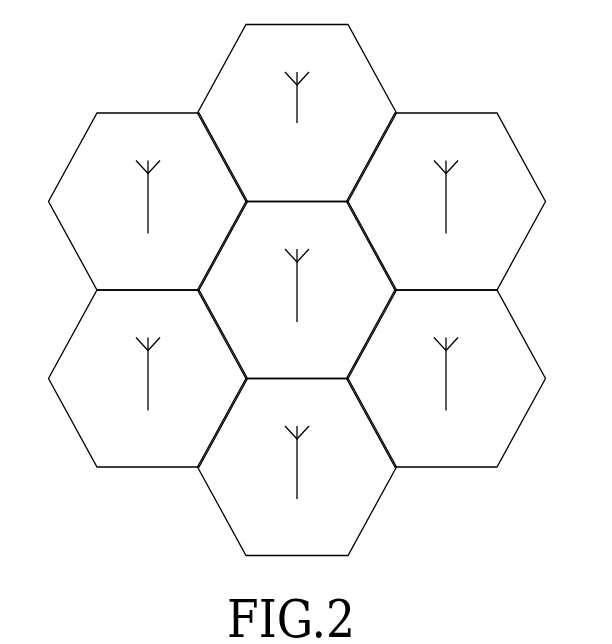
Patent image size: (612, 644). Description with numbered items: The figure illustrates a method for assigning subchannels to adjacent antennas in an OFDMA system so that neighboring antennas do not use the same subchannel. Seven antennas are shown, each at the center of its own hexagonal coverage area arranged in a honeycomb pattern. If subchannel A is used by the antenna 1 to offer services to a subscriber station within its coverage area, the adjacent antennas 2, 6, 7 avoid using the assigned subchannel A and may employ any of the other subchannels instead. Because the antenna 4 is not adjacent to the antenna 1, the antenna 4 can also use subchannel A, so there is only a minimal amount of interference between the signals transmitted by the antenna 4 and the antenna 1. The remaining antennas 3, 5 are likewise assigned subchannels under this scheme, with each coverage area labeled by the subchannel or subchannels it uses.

The antenna 1 is at (298, 98).
The antenna 2 is at (149, 204).
The antenna 3 is at (149, 380).
The antenna 4 is at (298, 469).
The antenna 5 is at (447, 380).
The antenna 6 is at (447, 204).
The antenna 7 is at (298, 292).